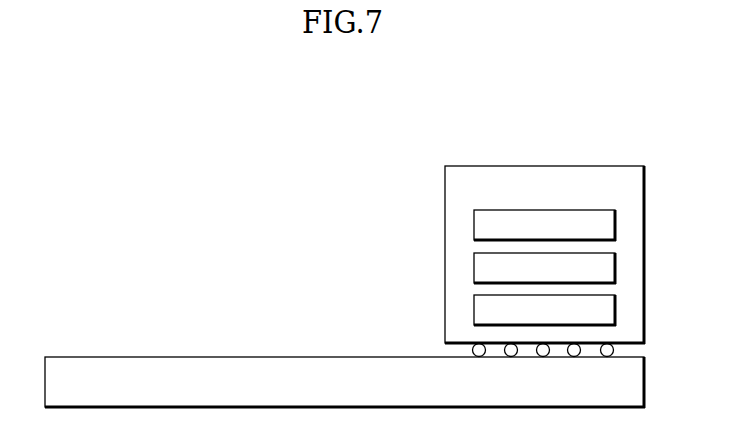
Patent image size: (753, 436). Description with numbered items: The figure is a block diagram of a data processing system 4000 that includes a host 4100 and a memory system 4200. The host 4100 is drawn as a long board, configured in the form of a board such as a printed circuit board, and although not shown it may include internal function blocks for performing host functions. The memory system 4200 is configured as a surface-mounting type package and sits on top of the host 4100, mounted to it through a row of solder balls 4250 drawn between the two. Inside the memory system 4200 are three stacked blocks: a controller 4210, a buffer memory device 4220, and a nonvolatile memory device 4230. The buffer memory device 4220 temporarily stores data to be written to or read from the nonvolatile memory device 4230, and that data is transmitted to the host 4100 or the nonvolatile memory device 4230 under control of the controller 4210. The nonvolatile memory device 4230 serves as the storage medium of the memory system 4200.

The data processing system 4000 is at (122, 139).
The host 4100 is at (345, 382).
The memory system 4200 is at (545, 255).
The controller 4210 is at (545, 225).
The buffer memory device 4220 is at (545, 268).
The nonvolatile memory device 4230 is at (545, 310).
The solder balls 4250 is at (625, 350).